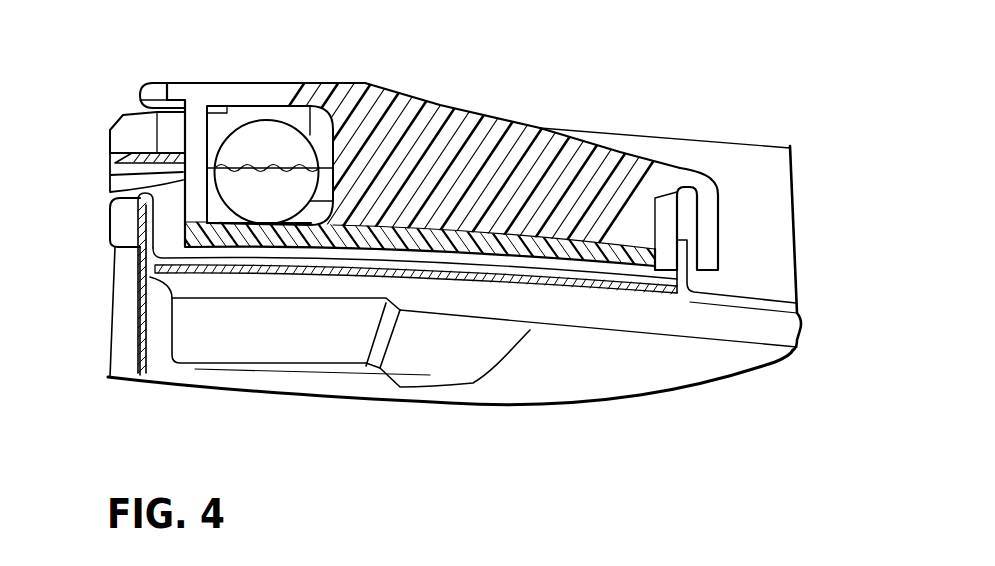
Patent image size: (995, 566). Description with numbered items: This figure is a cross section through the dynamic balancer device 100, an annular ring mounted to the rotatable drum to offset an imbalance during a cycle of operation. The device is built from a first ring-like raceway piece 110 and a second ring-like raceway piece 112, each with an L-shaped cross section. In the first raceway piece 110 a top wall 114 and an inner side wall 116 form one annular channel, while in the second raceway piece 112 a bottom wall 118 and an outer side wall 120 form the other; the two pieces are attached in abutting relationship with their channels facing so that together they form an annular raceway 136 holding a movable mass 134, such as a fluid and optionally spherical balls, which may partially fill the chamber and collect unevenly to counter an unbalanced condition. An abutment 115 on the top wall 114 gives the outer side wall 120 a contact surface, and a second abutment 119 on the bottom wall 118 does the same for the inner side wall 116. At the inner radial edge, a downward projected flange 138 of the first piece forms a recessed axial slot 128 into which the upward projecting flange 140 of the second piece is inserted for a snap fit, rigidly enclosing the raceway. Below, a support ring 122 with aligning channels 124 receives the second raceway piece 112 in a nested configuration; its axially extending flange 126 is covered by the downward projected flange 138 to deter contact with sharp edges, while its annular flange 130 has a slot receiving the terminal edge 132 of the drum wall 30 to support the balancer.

The dynamic balancer device 100 is at (69, 34).
The first ring-like raceway piece 110 is at (345, 78).
The second ring-like raceway piece 112 is at (170, 184).
The top wall 114 is at (297, 108).
The abutment 115 is at (182, 98).
The inner side wall 116 is at (400, 118).
The bottom wall 118 is at (247, 232).
The second abutment 119 is at (383, 305).
The outer side wall 120 is at (205, 142).
The support ring 122 is at (558, 294).
The aligning channels 124 is at (295, 342).
The axially extending flange 126 is at (690, 276).
The recessed axial slot 128 is at (688, 172).
The annular flange 130 is at (122, 219).
The terminal edge 132 is at (143, 240).
The movable mass 134 is at (273, 125).
The annular raceway 136 is at (224, 117).
The downward projected flange 138 is at (740, 225).
The flange 140 is at (665, 196).
The wall 30 is at (125, 350).